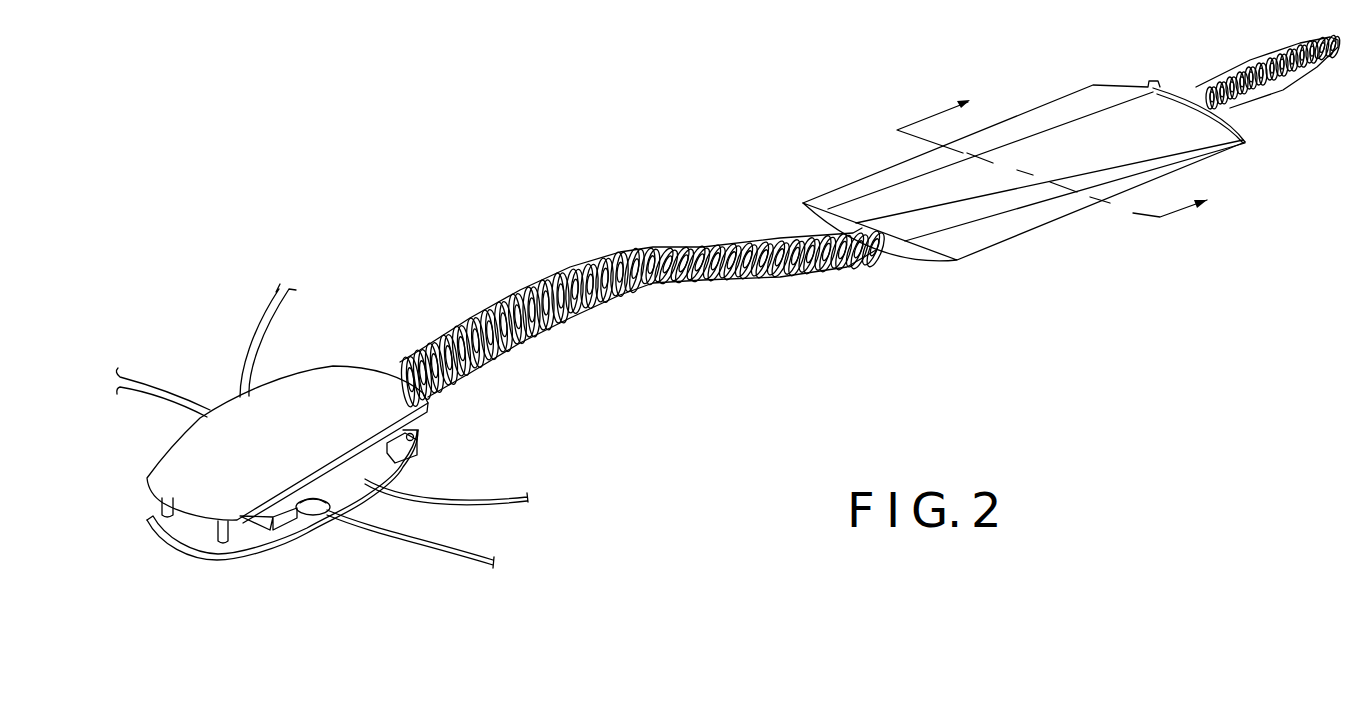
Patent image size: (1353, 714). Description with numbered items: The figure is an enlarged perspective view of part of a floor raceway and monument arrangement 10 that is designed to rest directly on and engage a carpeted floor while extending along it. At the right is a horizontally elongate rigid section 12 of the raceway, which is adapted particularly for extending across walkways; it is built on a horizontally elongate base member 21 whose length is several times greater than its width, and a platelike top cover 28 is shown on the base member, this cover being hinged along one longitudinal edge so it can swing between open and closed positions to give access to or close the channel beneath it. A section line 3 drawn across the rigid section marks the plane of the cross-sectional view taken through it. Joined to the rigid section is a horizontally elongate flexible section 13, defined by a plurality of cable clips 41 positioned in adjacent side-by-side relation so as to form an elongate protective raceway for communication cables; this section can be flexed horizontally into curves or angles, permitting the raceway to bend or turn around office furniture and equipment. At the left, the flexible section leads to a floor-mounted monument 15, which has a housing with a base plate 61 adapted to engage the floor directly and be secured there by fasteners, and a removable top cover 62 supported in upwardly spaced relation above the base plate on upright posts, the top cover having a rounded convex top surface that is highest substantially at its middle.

The section line 3- 3 is at (1037, 172).
The floor raceway and monument arrangement 10 is at (473, 278).
The rigid section 12 is at (1029, 203).
The flexible section 13 is at (870, 221).
The monument 15 is at (226, 572).
The base member 21 is at (859, 195).
The top cover 28 is at (1170, 138).
The cable clips 41 is at (565, 318).
The base plate 61 is at (183, 532).
The top cover 62 is at (338, 395).